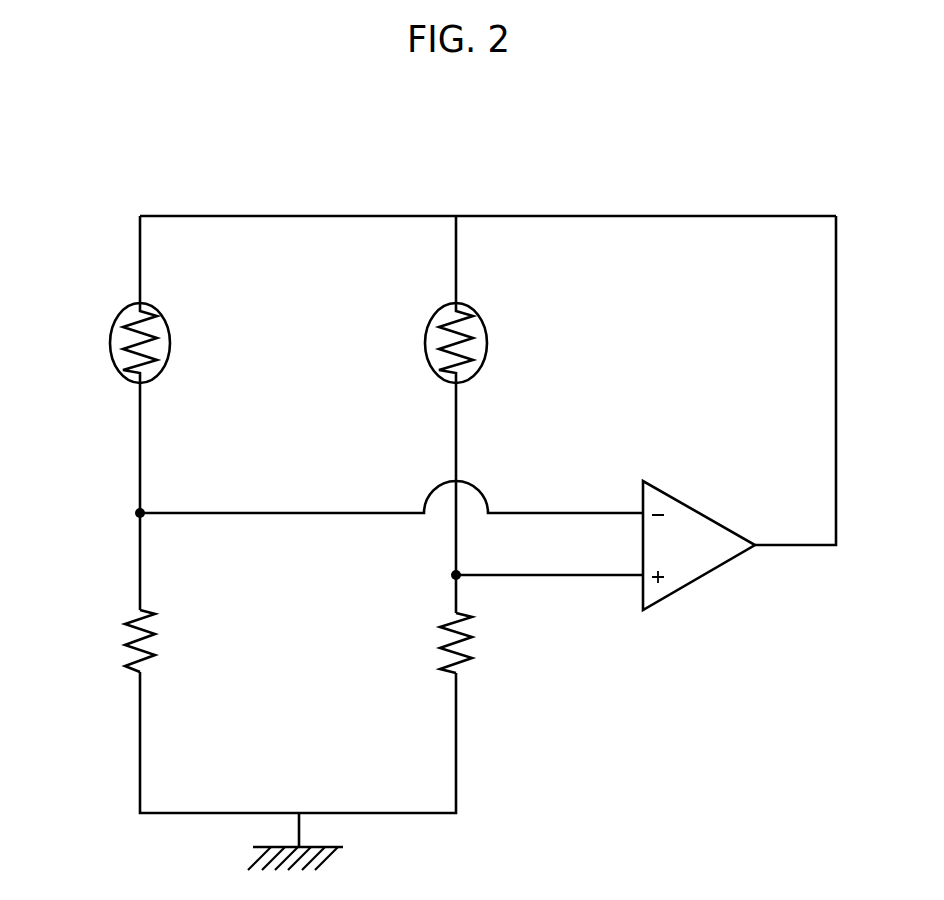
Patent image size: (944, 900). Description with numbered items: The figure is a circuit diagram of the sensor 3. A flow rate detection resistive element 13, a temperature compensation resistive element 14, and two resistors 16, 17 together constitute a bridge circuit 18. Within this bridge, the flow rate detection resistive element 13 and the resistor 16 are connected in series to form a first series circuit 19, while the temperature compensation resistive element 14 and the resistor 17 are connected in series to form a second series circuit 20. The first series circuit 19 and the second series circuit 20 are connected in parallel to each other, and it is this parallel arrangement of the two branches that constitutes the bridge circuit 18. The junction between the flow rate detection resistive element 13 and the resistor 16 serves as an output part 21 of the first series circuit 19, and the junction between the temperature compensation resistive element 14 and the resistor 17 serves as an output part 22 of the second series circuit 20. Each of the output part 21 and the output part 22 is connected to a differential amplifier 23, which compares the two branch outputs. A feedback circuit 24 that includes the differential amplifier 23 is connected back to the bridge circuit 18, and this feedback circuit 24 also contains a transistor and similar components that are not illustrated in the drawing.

The sensor 3 is at (565, 144).
The flow rate detection resistive element 13 is at (425, 355).
The temperature compensation resistive element 14 is at (110, 345).
The resistor 16 is at (468, 637).
The resistor 17 is at (128, 647).
The bridge circuit 18 is at (325, 192).
The first series circuit 19 is at (455, 261).
The second series circuit 20 is at (141, 261).
The output part 21 is at (454, 577).
The output part 22 is at (138, 515).
The differential amplifier 23 is at (702, 578).
The feedback circuit 24 is at (801, 194).